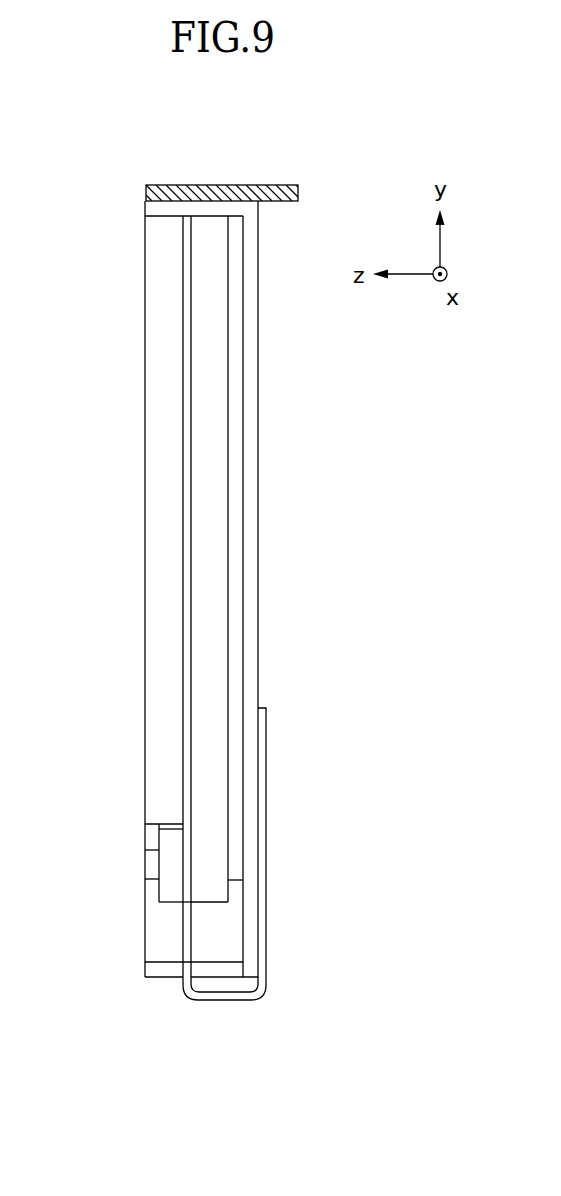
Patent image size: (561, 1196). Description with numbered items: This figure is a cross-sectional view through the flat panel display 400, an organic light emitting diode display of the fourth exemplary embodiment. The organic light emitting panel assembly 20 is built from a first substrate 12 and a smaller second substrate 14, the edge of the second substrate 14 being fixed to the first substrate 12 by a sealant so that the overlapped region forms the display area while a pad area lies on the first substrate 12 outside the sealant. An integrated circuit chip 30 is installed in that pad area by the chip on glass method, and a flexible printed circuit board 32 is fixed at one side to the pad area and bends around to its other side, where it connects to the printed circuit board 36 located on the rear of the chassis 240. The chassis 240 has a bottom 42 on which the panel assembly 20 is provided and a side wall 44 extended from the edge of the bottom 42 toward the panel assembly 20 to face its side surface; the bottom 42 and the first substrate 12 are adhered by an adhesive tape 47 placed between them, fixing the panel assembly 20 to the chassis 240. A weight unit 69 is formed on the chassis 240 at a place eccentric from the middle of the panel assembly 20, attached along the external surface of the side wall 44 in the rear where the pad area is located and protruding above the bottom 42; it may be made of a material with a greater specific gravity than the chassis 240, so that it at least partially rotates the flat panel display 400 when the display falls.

The flat panel display 400 is at (478, 492).
The organic light emitting panel assembly 20 is at (135, 281).
The weight unit 69 is at (240, 197).
The side wall 44 is at (174, 208).
The second substrate 14 is at (165, 363).
The first substrate 12 is at (205, 442).
The adhesive tape 47 is at (235, 499).
The integrated circuit chip 30 is at (152, 863).
The flexible printed circuit board 32 is at (185, 933).
The chassis 240 is at (274, 421).
The bottom 42 is at (258, 363).
The printed circuit board 36 is at (260, 865).